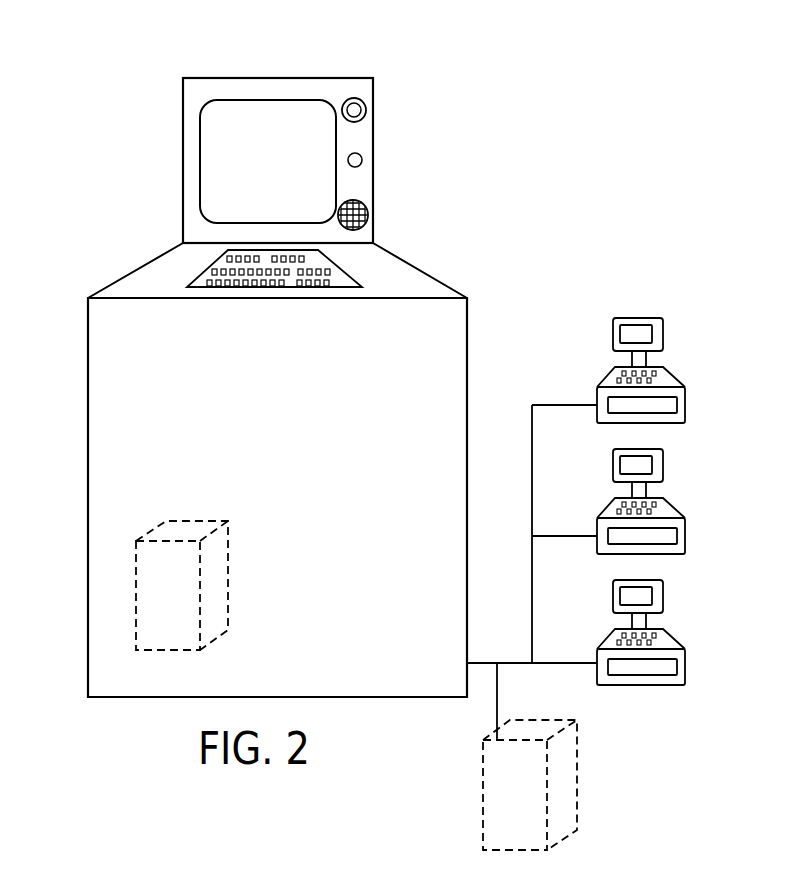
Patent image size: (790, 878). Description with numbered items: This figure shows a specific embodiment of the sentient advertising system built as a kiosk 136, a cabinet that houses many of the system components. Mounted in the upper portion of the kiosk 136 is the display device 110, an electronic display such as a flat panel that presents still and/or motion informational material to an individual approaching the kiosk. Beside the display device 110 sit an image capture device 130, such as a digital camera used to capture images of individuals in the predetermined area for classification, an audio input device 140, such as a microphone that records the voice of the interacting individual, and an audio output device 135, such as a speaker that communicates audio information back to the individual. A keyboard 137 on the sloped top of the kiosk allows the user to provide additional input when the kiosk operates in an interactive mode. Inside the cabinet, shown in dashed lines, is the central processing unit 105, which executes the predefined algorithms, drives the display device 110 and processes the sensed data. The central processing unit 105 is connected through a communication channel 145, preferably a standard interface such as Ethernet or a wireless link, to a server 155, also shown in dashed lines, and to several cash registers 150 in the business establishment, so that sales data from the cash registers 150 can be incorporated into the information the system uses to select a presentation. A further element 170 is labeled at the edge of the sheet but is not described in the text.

The central processing unit 105 is at (136, 598).
The display device 110 is at (218, 153).
The image capture device 130 is at (366, 110).
The audio output device 135 is at (369, 215).
The kiosk 136 is at (312, 78).
The keyboard 137 is at (208, 275).
The audio input device 140 is at (362, 159).
The communication channel 145 is at (557, 403).
The cash register 150 is at (686, 390).
The server 155 is at (578, 780).
The network connection 170 is at (40, 869).